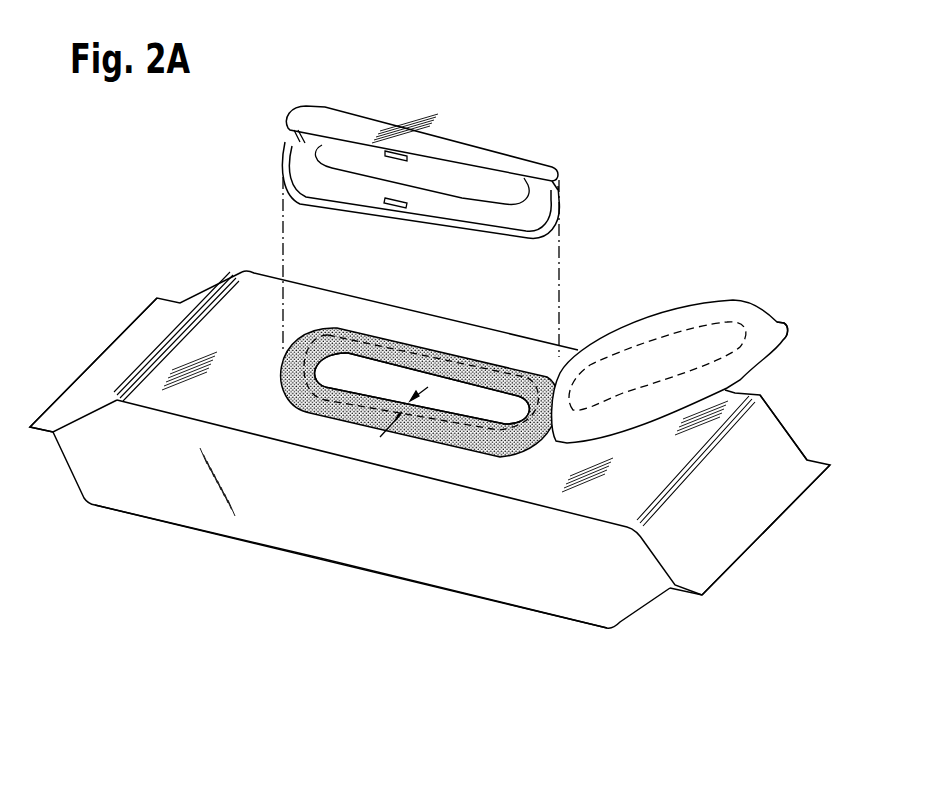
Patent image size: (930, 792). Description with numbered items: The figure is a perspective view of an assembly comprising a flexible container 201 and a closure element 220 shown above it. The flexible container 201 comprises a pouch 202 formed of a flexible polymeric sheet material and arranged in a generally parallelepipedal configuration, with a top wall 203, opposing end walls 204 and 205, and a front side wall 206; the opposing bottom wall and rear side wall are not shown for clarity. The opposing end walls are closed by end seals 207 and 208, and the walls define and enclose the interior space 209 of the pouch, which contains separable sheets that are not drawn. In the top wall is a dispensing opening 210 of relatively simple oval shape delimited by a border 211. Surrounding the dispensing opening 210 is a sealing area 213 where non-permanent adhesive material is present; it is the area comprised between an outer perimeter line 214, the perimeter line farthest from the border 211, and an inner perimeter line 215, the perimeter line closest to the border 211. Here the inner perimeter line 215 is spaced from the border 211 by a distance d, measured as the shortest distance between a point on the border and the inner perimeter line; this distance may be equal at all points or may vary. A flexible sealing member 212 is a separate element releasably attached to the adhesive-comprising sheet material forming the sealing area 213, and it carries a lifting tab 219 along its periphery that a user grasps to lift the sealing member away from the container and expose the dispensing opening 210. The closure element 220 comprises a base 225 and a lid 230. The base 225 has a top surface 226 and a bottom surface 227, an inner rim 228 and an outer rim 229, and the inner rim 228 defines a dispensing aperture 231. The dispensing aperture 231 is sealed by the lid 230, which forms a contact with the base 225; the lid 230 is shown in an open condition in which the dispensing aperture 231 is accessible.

The flexible container 201 is at (116, 270).
The pouch 202 is at (120, 510).
The top wall 203 is at (740, 397).
The end wall 204 is at (133, 365).
The end wall 205 is at (780, 447).
The front side wall 206 is at (335, 537).
The end seal 207 is at (73, 393).
The end seal 208 is at (737, 543).
The interior space 209 is at (544, 557).
The dispensing opening 210 is at (404, 392).
The border 211 is at (357, 352).
The flexible sealing member 212 is at (743, 303).
The sealing area 213 is at (332, 325).
The outer perimeter line 214 is at (306, 414).
The inner perimeter line 215 is at (447, 368).
The lifting tab 219 is at (787, 322).
The closure element 220 is at (571, 163).
The base 225 is at (560, 189).
The top surface 226 is at (293, 137).
The bottom surface 227 is at (318, 198).
The inner rim 228 is at (475, 202).
The outer rim 229 is at (553, 218).
The lid 230 is at (448, 145).
The dispensing aperture 231 is at (353, 157).
The distance d is at (417, 405).